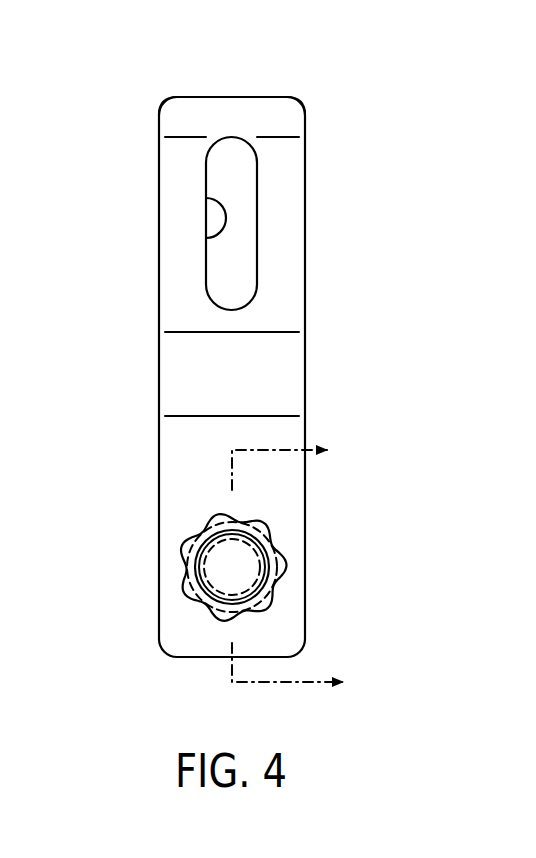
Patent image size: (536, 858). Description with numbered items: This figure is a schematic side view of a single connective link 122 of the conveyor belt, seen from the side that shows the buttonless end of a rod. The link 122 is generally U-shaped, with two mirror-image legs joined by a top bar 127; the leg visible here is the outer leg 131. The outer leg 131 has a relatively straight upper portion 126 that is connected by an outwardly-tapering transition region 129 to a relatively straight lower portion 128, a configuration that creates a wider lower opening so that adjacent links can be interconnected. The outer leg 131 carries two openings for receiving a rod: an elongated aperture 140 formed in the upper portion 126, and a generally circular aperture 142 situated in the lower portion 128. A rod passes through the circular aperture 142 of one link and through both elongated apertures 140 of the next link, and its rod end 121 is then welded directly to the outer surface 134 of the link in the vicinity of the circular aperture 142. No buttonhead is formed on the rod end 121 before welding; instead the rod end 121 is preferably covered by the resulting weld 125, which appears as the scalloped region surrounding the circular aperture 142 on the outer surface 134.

The connective link 122 is at (320, 144).
The top bar 127 is at (232, 95).
The upper portion 126 is at (293, 216).
The elongated aperture 140 is at (218, 235).
The outer leg 131 is at (307, 323).
The transition region 129 is at (173, 367).
The outer surface 134 is at (192, 445).
The lower portion 128 is at (292, 500).
The weld 125 is at (198, 530).
The circular aperture 142 is at (178, 568).
The rod end 121 is at (242, 572).